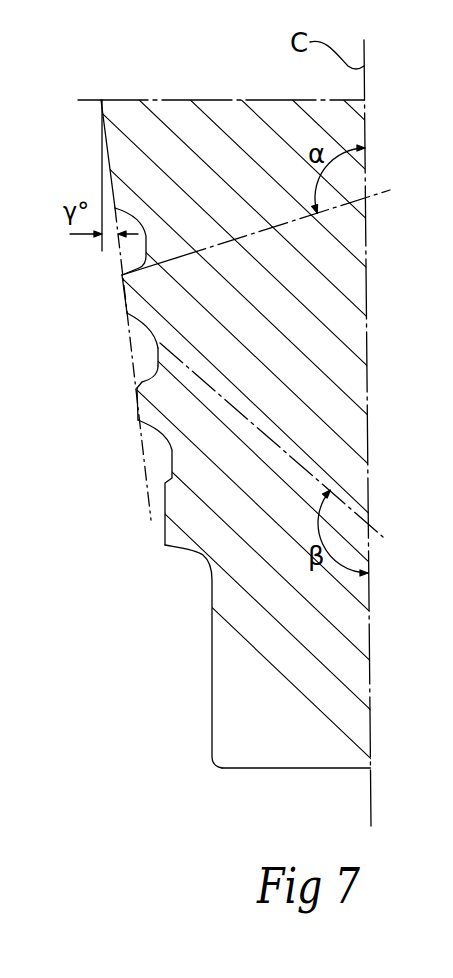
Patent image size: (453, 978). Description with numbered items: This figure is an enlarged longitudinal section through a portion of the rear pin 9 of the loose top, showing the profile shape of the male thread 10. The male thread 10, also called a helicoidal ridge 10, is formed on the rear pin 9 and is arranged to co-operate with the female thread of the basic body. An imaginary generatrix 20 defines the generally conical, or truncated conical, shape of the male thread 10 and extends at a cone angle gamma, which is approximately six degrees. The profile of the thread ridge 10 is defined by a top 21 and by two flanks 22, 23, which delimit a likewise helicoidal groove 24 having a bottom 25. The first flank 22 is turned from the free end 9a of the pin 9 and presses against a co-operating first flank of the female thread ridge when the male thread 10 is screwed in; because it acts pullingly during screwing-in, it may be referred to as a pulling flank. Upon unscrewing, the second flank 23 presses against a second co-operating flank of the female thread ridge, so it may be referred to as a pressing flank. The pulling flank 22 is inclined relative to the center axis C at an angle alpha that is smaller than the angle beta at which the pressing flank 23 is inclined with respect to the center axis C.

The rear pin 9 is at (194, 669).
The free end of the pin 9a is at (260, 770).
The male thread 10 is at (128, 299).
The imaginary generatrix 20 is at (150, 502).
The top 21 is at (152, 409).
The first flank 22 is at (130, 266).
The second flank 23 is at (155, 440).
The helicoidal groove 24 is at (140, 345).
The bottom 25 is at (158, 352).